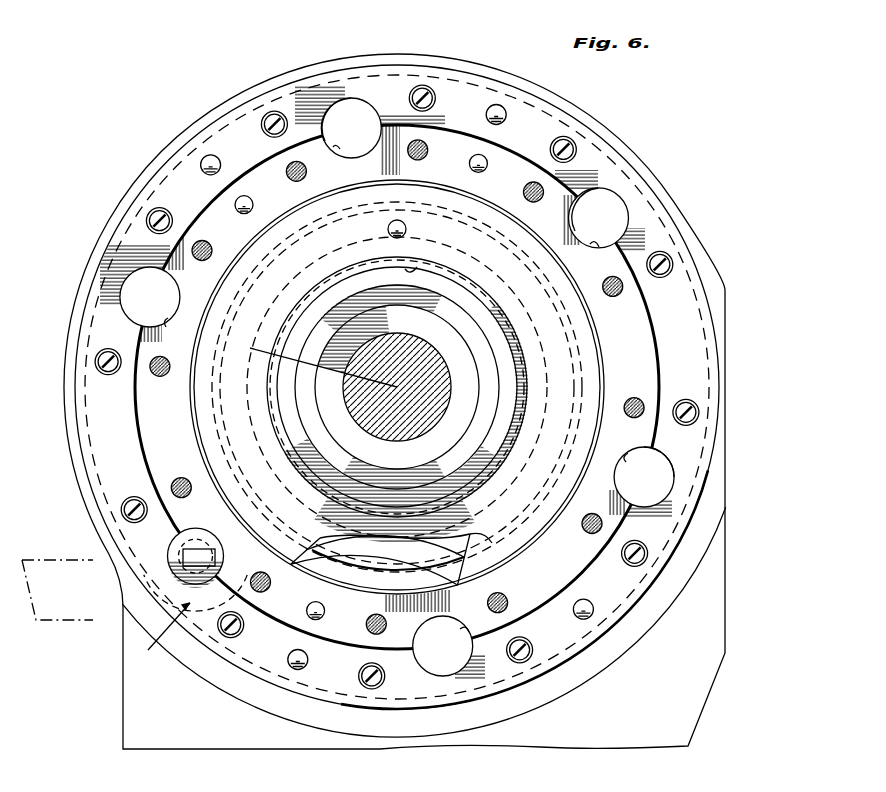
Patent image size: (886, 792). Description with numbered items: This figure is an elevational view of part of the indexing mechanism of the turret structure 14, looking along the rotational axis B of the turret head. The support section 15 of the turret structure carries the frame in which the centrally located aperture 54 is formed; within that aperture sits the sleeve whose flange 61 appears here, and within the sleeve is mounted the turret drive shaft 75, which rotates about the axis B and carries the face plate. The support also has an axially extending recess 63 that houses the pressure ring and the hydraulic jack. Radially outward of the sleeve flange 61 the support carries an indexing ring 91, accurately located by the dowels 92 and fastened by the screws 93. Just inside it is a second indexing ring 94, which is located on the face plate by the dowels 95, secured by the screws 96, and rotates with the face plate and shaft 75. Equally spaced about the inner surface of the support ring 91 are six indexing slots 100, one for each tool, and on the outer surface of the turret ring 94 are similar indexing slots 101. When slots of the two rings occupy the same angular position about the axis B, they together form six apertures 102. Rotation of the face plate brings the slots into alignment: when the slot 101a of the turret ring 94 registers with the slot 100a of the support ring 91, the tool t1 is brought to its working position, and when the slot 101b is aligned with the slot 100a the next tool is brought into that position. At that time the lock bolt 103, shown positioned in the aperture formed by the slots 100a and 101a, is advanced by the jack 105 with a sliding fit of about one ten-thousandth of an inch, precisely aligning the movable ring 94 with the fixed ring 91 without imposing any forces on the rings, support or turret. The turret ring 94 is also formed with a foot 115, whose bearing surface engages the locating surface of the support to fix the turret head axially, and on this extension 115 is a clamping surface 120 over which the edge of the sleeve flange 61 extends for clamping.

The turret structure 14 is at (653, 168).
The support section 15 is at (726, 330).
The centrally located aperture 54 is at (415, 264).
The sleeve flange 61 is at (462, 575).
The axially extending recess 63 is at (388, 226).
The turret drive shaft 75 is at (380, 441).
The indexing ring 91 is at (227, 106).
The dowels 92 is at (505, 108).
The screws 93 is at (428, 92).
The indexing ring 94 is at (257, 158).
The dowels 95 is at (251, 198).
The screws 96 is at (162, 376).
The indexing slots 100 is at (357, 104).
The indexing slot 100a is at (178, 587).
The indexing slots 101 is at (334, 147).
The indexing slot 101a is at (194, 543).
The indexing slot 101b is at (166, 327).
The apertures 102 is at (336, 106).
The lock bolt 103 is at (170, 597).
The jack 105 is at (157, 634).
The foot 115 is at (383, 564).
The clamping surface 120 is at (424, 582).
The axis B is at (314, 363).
The tool t1 is at (46, 556).